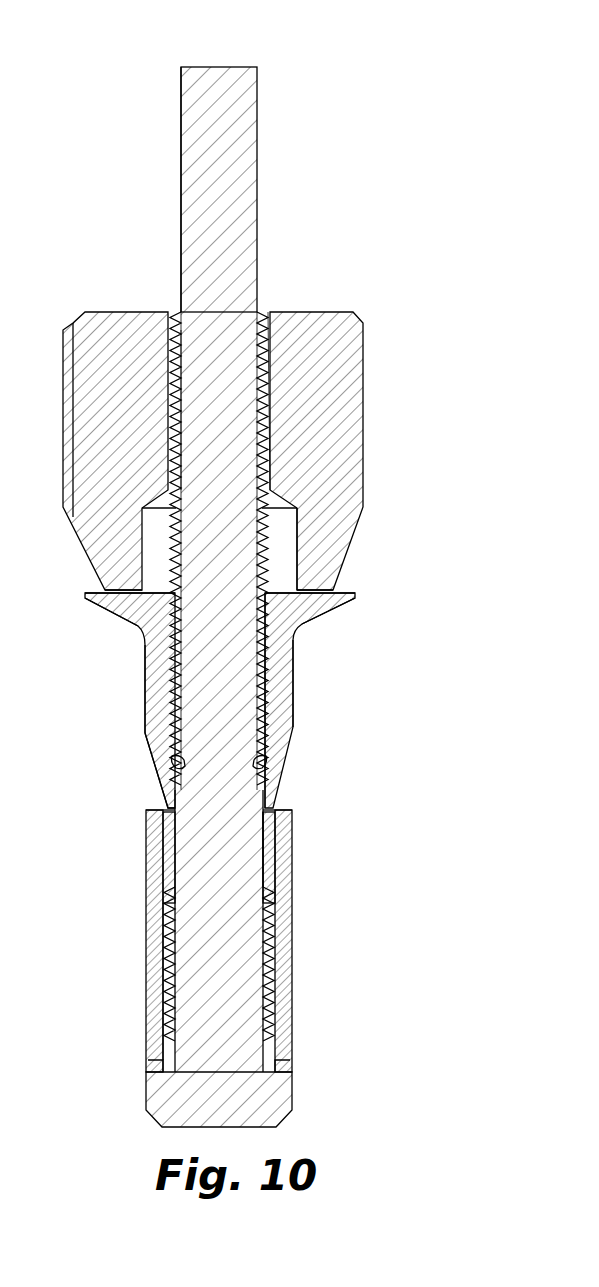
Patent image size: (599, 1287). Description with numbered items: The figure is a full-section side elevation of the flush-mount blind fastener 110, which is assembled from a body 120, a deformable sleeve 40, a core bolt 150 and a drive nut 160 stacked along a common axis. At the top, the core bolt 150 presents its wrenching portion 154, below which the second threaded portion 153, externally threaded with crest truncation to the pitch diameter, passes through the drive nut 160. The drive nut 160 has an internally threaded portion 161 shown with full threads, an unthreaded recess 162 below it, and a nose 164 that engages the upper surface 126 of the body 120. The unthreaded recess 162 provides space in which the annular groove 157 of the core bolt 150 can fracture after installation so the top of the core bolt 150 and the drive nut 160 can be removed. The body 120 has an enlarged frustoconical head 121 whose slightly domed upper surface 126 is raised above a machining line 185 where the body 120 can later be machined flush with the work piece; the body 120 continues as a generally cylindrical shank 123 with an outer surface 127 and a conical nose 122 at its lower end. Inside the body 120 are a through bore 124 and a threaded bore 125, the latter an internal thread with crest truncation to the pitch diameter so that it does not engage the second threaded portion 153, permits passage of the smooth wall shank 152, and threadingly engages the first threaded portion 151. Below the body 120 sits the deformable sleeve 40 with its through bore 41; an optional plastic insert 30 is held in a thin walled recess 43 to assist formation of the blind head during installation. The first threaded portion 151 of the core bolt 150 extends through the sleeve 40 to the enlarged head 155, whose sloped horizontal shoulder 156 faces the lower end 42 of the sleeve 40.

The blind fastener 110 is at (298, 70).
The core bolt 150 is at (219, 67).
The wrenching portion 154 is at (181, 127).
The second threaded portion 153 is at (168, 385).
The enlarged head 155 is at (255, 1105).
The smooth wall shank 152 is at (266, 846).
The first threaded portion 151 is at (268, 955).
The drive nut 160 is at (325, 358).
The internally threaded portion 161 is at (270, 335).
The unthreaded recess 162 is at (287, 522).
The nose 164 is at (323, 597).
The upper surface 126 is at (157, 590).
The body 120 is at (160, 650).
The machining line 185 is at (130, 612).
The enlarged frustoconical head 121 is at (320, 616).
The through bore 124 is at (268, 630).
The outer surface 127 is at (295, 666).
The shank 123 is at (145, 688).
The annular groove 157 is at (170, 763).
The threaded bore 125 is at (268, 745).
The conical nose 122 is at (155, 776).
The deformable sleeve 40 is at (152, 942).
The thin walled recess 43 is at (168, 860).
The plastic insert 30 is at (278, 868).
The through bore 41 is at (170, 1005).
The horizontal shoulder 156 is at (150, 1068).
The lower end 42 is at (280, 1080).